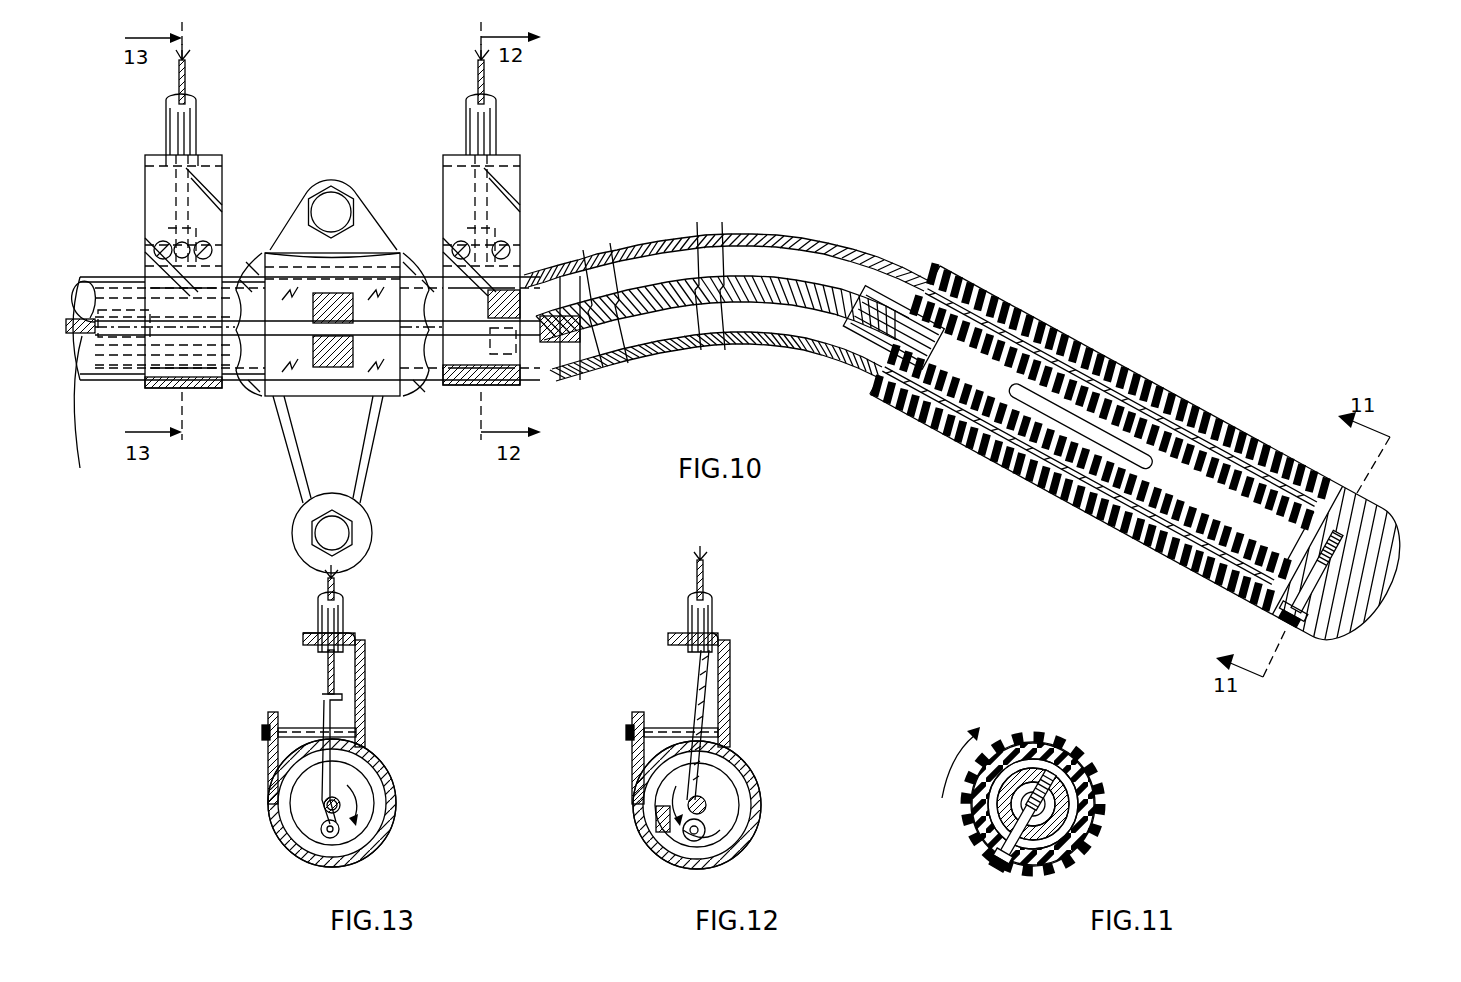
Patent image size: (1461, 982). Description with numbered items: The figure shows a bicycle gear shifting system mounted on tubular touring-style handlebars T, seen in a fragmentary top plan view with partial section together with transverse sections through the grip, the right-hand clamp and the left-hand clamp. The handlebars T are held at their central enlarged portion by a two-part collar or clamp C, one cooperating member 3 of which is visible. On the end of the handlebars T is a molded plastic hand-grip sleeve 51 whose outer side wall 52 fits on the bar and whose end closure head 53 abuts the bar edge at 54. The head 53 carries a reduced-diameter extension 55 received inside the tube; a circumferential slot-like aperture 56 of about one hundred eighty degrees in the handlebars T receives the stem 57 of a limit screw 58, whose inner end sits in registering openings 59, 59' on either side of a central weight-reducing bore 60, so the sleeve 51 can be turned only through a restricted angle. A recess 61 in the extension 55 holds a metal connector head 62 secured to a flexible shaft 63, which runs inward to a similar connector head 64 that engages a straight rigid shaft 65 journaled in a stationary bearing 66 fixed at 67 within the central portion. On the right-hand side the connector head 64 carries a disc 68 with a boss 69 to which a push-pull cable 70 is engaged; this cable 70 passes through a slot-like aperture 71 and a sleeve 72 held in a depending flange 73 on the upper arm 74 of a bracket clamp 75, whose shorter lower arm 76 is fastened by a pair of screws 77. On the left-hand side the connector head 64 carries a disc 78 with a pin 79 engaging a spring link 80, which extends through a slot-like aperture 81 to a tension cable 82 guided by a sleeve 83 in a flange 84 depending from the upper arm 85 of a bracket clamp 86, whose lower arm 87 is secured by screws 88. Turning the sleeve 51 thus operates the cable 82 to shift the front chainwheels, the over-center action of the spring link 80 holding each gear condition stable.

In FIG. 10, the cooperating member 3 is at (366, 186).
In FIG. 10, the sleeve 51 is at (1130, 395).
In FIG. 11, the sleeve 51 is at (1075, 806).
In FIG. 10, the outer side wall 52 is at (1160, 410).
In FIG. 11, the outer side wall 52 is at (1090, 818).
In FIG. 10, the end closure head 53 is at (1353, 627).
In FIG. 10, the abutment of head against handlebar edge 54 is at (1333, 627).
In FIG. 10, the extension 55 is at (1215, 440).
In FIG. 11, the extension 55 is at (1108, 834).
In FIG. 10, the slot-like aperture 56 is at (1257, 592).
In FIG. 11, the slot-like aperture 56 is at (1000, 800).
In FIG. 10, the stem 57 is at (1287, 597).
In FIG. 11, the stem 57 is at (1008, 838).
In FIG. 10, the limit screw 58 is at (1290, 610).
In FIG. 11, the limit screw 58 is at (1000, 858).
In FIG. 10, the registering opening 59 is at (1358, 576).
In FIG. 11, the registering opening 59 is at (1091, 844).
In FIG. 10, the registering opening 59' is at (1378, 526).
In FIG. 11, the registering opening 59' is at (1114, 777).
In FIG. 10, the central weight-reducing bore 60 is at (1095, 380).
In FIG. 10, the recess 61 is at (935, 325).
In FIG. 10, the connector head 62 is at (903, 322).
In FIG. 10, the flexible shaft 63 is at (946, 188).
In FIG. 10, the connector head 64 is at (621, 240).
In FIG. 10, the rigid shaft 65 is at (272, 405).
In FIG. 13, the rigid shaft 65 is at (340, 803).
In FIG. 12, the rigid shaft 65 is at (706, 800).
In FIG. 10, the stationary bearing 66 is at (343, 368).
In FIG. 10, the bearing mounting location 67 is at (365, 345).
In FIG. 10, the disc 68 is at (570, 303).
In FIG. 12, the disc 68 is at (720, 830).
In FIG. 10, the boss 69 is at (497, 386).
In FIG. 12, the boss 69 is at (708, 825).
In FIG. 10, the push-pull cable 70 is at (480, 90).
In FIG. 12, the push-pull cable 70 is at (705, 578).
In FIG. 12, the slot-like aperture 71 is at (660, 775).
In FIG. 10, the sleeve 72 is at (490, 120).
In FIG. 12, the sleeve 72 is at (712, 600).
In FIG. 10, the depending flange 73 is at (510, 183).
In FIG. 12, the depending flange 73 is at (718, 635).
In FIG. 10, the upper arm 74 is at (518, 193).
In FIG. 12, the upper arm 74 is at (731, 655).
In FIG. 10, the bracket clamp 75 is at (520, 207).
In FIG. 12, the bracket clamp 75 is at (731, 672).
In FIG. 12, the lower arm 76 is at (635, 715).
In FIG. 10, the screws 77 is at (456, 248).
In FIG. 12, the screws 77 is at (680, 727).
In FIG. 13, the disc 78 is at (305, 783).
In FIG. 13, the pin 79 is at (322, 829).
In FIG. 10, the spring link 80 is at (190, 226).
In FIG. 13, the spring link 80 is at (322, 801).
In FIG. 13, the slot-like aperture 81 is at (300, 766).
In FIG. 10, the push-pull or tension cable 82 is at (187, 73).
In FIG. 13, the push-pull or tension cable 82 is at (328, 587).
In FIG. 10, the sleeve 83 is at (200, 97).
In FIG. 13, the sleeve 83 is at (320, 616).
In FIG. 10, the flange 84 is at (207, 153).
In FIG. 13, the flange 84 is at (303, 640).
In FIG. 10, the upper arm 85 is at (148, 177).
In FIG. 13, the upper arm 85 is at (366, 665).
In FIG. 10, the bracket clamp 86 is at (147, 197).
In FIG. 13, the bracket clamp 86 is at (366, 690).
In FIG. 13, the lower arm 87 is at (270, 713).
In FIG. 10, the screws 88 is at (157, 250).
In FIG. 13, the screws 88 is at (265, 733).
In FIG. 10, the collar or clamp C is at (348, 332).
In FIG. 10, the handlebars T is at (628, 232).
In FIG. 13, the handlebars T is at (378, 762).
In FIG. 12, the handlebars T is at (660, 762).
In FIG. 11, the handlebars T is at (1060, 778).